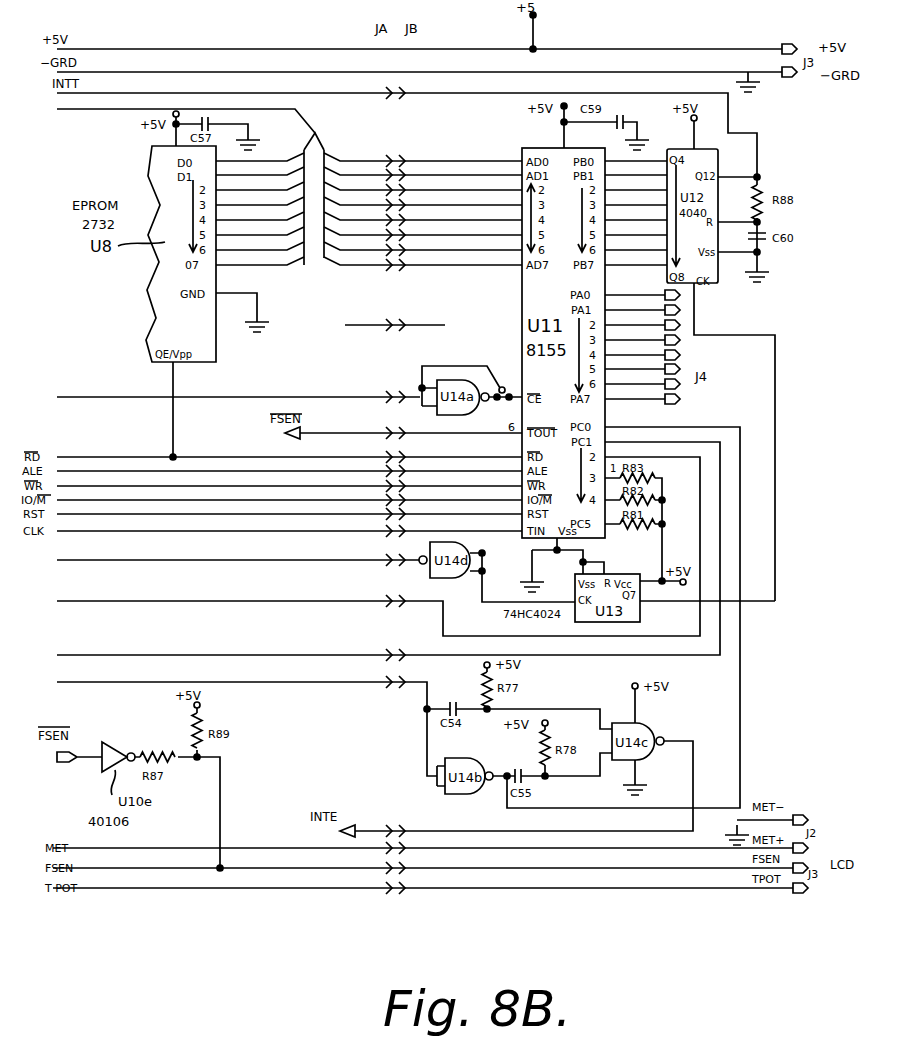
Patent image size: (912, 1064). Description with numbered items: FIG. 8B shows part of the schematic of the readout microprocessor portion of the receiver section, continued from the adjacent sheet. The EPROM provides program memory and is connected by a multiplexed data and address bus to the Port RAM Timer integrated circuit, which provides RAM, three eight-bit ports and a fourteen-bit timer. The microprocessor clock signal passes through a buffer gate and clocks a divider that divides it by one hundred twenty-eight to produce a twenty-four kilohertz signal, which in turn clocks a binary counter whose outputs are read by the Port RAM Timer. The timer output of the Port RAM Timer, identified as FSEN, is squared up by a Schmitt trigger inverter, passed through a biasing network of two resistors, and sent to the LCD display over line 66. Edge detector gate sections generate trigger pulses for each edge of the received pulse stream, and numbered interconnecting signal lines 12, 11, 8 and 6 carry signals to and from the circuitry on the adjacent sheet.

The line 66 is at (297, 868).
The signal line 12 is at (388, 521).
The signal line 11 is at (263, 559).
The signal line 8 is at (378, 546).
The signal line 6 is at (334, 726).